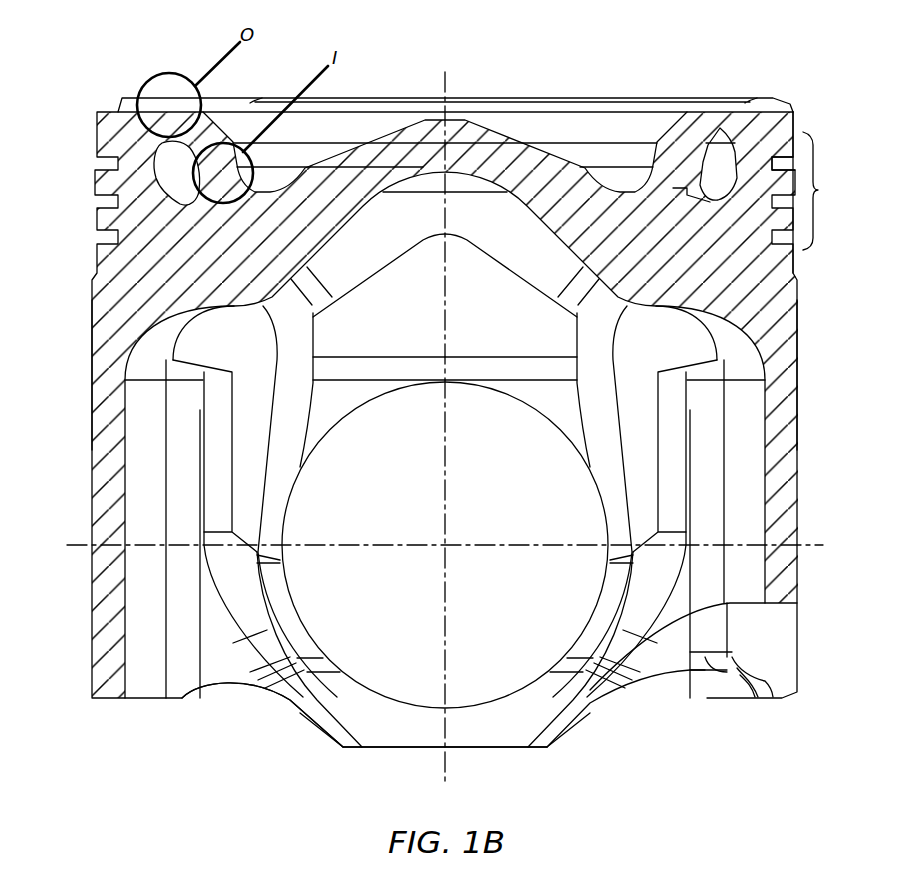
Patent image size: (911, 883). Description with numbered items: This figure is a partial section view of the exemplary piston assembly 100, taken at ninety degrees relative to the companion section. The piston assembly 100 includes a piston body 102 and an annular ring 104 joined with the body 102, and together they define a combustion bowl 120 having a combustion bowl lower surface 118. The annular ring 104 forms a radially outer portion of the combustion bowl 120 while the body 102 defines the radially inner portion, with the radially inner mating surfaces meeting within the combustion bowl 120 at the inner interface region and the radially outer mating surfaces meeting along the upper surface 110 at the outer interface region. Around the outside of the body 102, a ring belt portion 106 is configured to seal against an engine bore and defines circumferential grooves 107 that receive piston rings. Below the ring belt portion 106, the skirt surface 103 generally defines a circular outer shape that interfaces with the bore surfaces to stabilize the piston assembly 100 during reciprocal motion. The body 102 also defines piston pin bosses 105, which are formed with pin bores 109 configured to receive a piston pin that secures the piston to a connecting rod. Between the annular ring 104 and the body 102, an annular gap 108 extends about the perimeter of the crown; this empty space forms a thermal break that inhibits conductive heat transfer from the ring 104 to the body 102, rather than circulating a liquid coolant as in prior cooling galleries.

The piston assembly 100 is at (62, 90).
The piston body 102 is at (103, 270).
The skirt surface 103 is at (800, 450).
The annular ring 104 is at (212, 135).
The piston pin bosses 105 is at (353, 708).
The ring belt portion 106 is at (824, 192).
The circumferential grooves 107 is at (792, 163).
The annular gap 108 is at (173, 160).
The pin bores 109 is at (390, 697).
The upper surface 110 is at (128, 98).
The combustion bowl lower surface 118 is at (343, 153).
The combustion bowl 120 is at (558, 137).